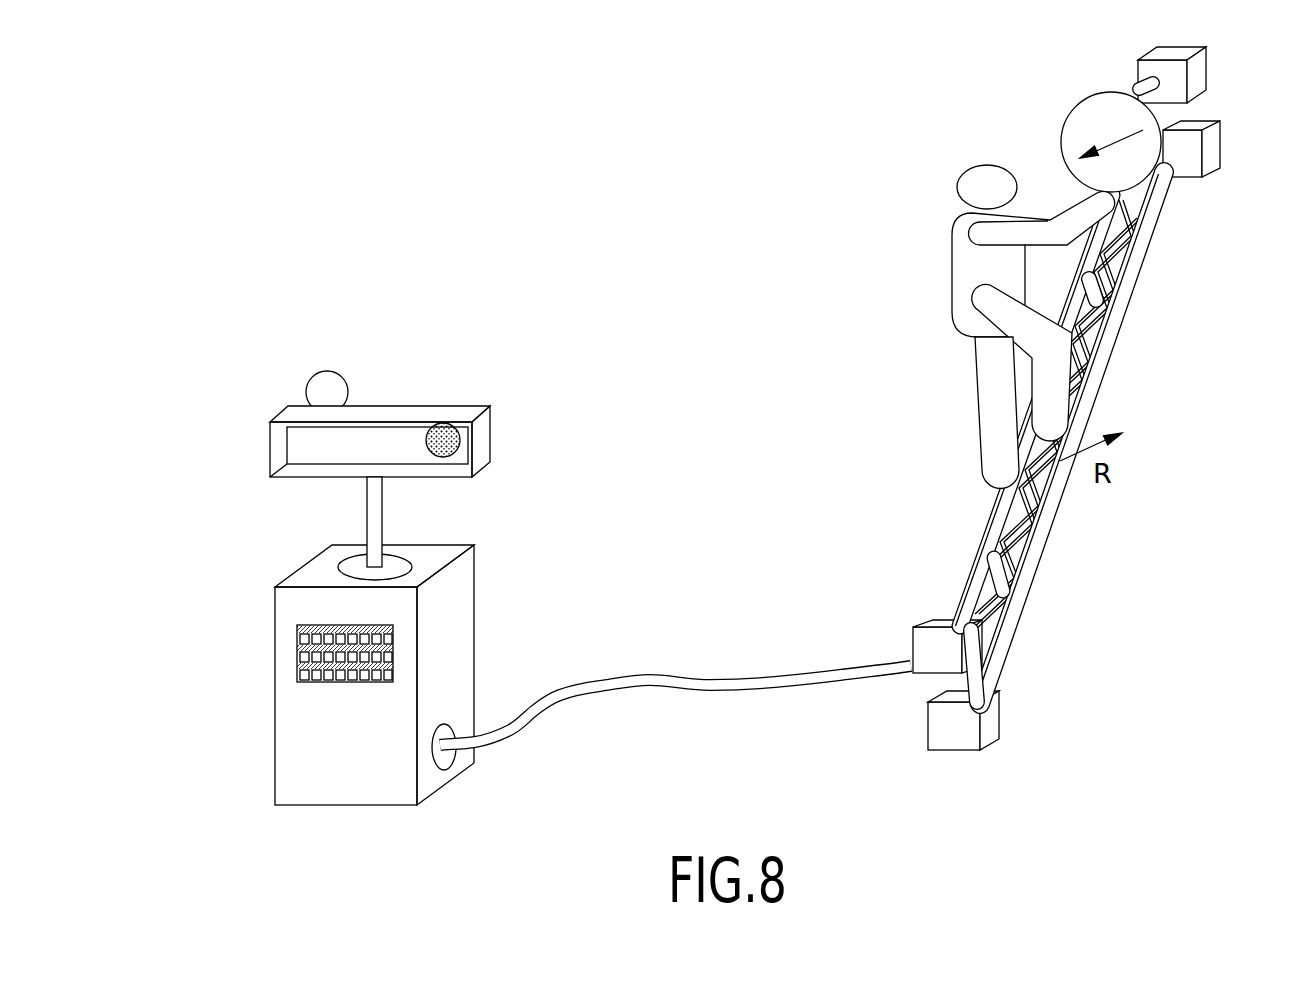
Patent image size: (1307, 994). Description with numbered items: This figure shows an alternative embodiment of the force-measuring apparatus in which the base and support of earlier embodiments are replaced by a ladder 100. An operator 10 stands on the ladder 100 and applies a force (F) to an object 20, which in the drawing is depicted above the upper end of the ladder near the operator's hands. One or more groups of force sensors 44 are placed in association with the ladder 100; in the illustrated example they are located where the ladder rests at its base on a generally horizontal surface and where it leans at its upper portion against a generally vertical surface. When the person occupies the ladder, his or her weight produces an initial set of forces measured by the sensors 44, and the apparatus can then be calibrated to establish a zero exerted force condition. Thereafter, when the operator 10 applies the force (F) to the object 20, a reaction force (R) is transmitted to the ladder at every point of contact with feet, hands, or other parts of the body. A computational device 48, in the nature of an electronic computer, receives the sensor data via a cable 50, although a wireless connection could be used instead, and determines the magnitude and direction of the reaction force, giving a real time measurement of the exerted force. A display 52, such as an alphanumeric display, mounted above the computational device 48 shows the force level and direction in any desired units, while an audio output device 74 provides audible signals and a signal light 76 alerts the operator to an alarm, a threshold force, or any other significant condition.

The operator 10 is at (952, 270).
The object 20 is at (1072, 104).
The force sensors 44 is at (1205, 72).
The computational device 48 is at (275, 663).
The cable 50 is at (600, 693).
The display 52 is at (488, 437).
The audio output device 74 is at (445, 422).
The signal light 76 is at (308, 383).
The ladder 100 is at (1128, 274).